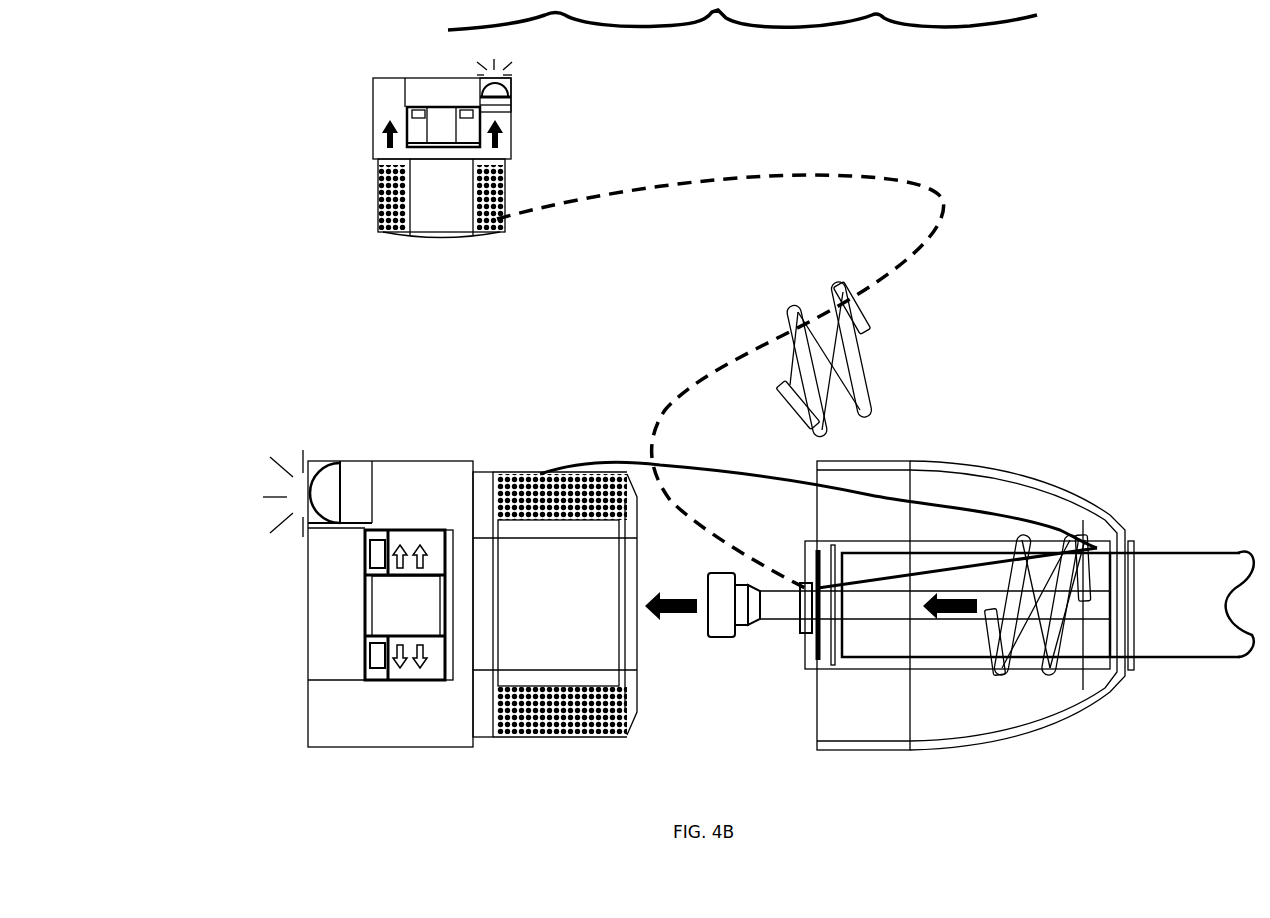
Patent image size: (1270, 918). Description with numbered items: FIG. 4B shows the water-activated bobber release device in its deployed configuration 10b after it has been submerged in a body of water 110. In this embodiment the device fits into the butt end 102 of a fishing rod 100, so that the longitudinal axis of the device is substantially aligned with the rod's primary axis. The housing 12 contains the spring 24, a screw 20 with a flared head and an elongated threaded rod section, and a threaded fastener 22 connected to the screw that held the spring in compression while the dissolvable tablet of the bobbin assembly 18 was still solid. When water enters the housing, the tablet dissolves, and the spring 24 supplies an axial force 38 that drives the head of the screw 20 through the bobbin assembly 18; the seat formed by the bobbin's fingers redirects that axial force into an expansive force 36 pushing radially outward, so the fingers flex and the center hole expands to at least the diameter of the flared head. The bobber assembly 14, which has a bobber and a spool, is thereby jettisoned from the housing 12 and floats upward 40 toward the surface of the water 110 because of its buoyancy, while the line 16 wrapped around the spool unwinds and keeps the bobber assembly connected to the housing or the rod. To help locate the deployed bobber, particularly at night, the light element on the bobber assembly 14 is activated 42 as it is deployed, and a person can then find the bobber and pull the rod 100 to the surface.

The body of water 110 is at (1044, 81).
The line 16 is at (947, 193).
The spring 24 is at (870, 380).
The bobber assembly 14 is at (375, 155).
The floating upward 40 is at (503, 138).
The light activation 42 is at (503, 68).
The bobbin assembly 18 is at (405, 105).
The expansive force 36 is at (370, 675).
The axial force 38 is at (675, 617).
The threaded fastener 22 is at (803, 633).
The screw 20 is at (882, 613).
The housing 12 is at (997, 733).
The deployed configuration 10b is at (1152, 742).
The butt end 102 is at (1177, 650).
The fishing rod 100 is at (1192, 505).